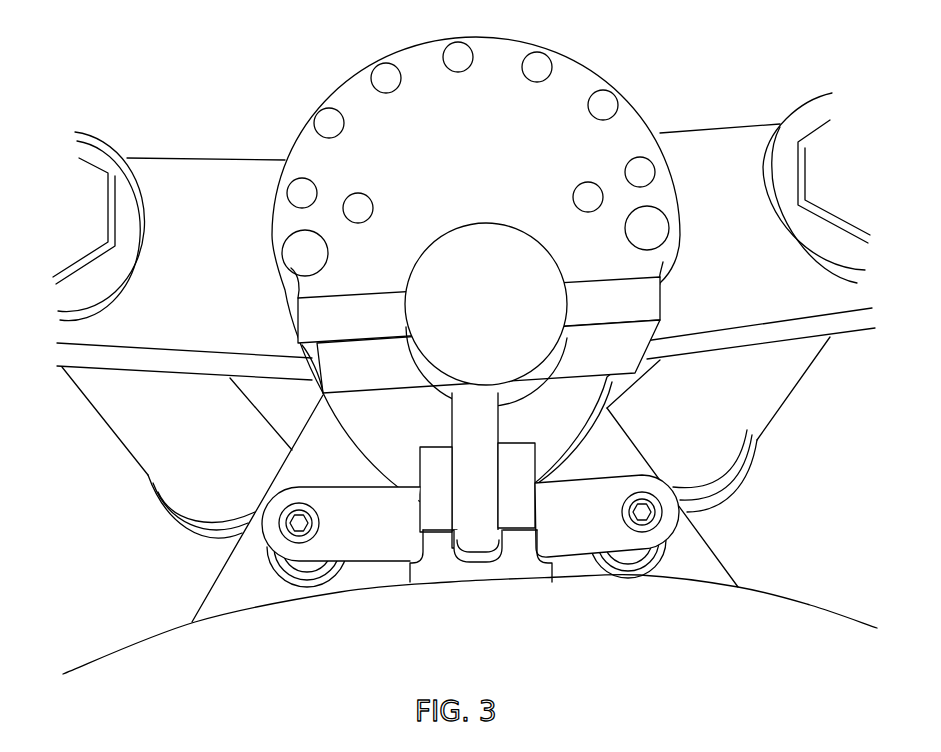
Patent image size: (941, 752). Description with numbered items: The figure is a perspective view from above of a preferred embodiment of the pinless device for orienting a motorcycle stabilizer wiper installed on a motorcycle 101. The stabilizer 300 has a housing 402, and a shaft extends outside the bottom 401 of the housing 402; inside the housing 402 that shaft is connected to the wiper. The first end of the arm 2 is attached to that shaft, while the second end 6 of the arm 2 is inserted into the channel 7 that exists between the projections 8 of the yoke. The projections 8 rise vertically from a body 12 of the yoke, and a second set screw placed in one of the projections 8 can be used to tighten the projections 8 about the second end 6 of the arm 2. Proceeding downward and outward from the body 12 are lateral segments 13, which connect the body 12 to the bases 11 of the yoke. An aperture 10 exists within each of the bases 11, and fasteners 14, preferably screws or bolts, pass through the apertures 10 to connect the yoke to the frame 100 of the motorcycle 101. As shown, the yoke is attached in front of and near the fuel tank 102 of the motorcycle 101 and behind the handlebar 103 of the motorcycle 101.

The stabilizer 300 is at (485, 170).
The housing 402 is at (345, 102).
The bottom 401 is at (315, 345).
The handlebar 103 is at (765, 266).
The motorcycle 101 is at (767, 307).
The frame 100 is at (220, 592).
The fuel tank 102 is at (472, 652).
The arm 2 is at (452, 418).
The second end 6 is at (495, 540).
The channel 7 is at (453, 513).
The projections 8 is at (428, 460).
The aperture 10 is at (285, 533).
The bases 11 is at (303, 555).
The body 12 is at (447, 565).
The lateral segments 13 is at (370, 555).
The fasteners 14 is at (298, 512).